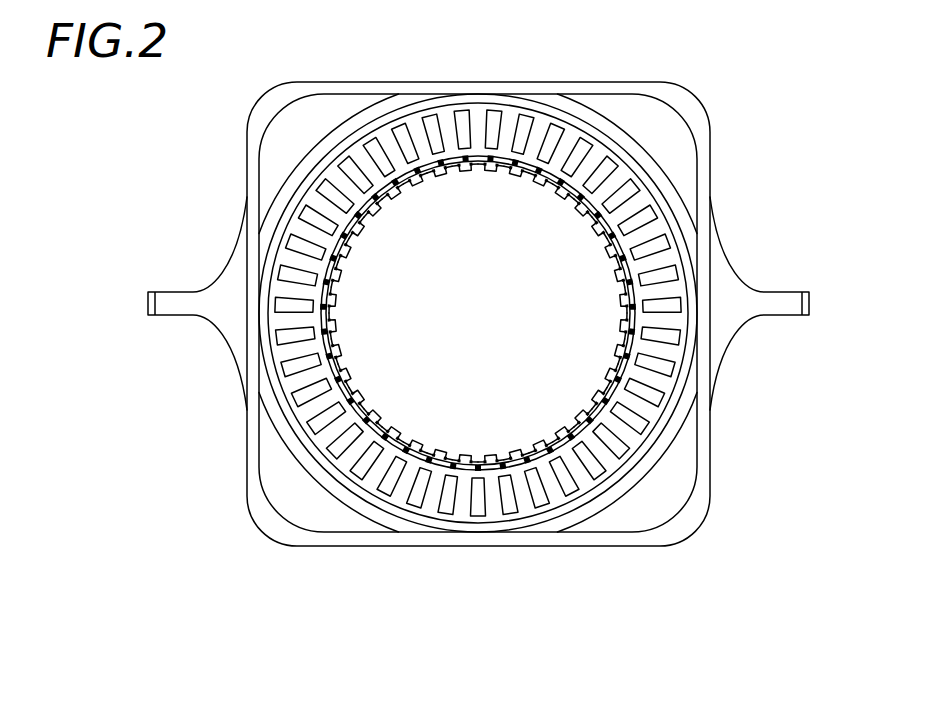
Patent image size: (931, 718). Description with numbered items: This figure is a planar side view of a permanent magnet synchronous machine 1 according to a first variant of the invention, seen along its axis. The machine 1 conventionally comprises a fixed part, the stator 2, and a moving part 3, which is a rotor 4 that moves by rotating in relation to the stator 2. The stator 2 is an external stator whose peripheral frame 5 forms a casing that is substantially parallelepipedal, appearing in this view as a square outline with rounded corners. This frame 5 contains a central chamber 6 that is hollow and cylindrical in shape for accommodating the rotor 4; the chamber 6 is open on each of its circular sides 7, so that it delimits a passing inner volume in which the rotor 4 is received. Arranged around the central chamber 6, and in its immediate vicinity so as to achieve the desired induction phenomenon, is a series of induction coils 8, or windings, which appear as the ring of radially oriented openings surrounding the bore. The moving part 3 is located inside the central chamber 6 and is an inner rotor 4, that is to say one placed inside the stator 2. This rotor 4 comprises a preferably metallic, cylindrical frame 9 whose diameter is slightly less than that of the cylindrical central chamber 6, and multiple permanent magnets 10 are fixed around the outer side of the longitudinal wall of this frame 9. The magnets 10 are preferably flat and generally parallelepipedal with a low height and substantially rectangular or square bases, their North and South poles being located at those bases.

The permanent magnet synchronous machine 1 is at (151, 126).
The stator 2 is at (684, 79).
The moving part 3 is at (480, 458).
The rotor 4 is at (480, 458).
The peripheral frame 5 is at (483, 92).
The central chamber 6 is at (404, 273).
The circular sides 7 is at (407, 377).
The induction coils 8 is at (405, 138).
The frame 9 is at (337, 377).
The permanent magnets 10 is at (505, 157).